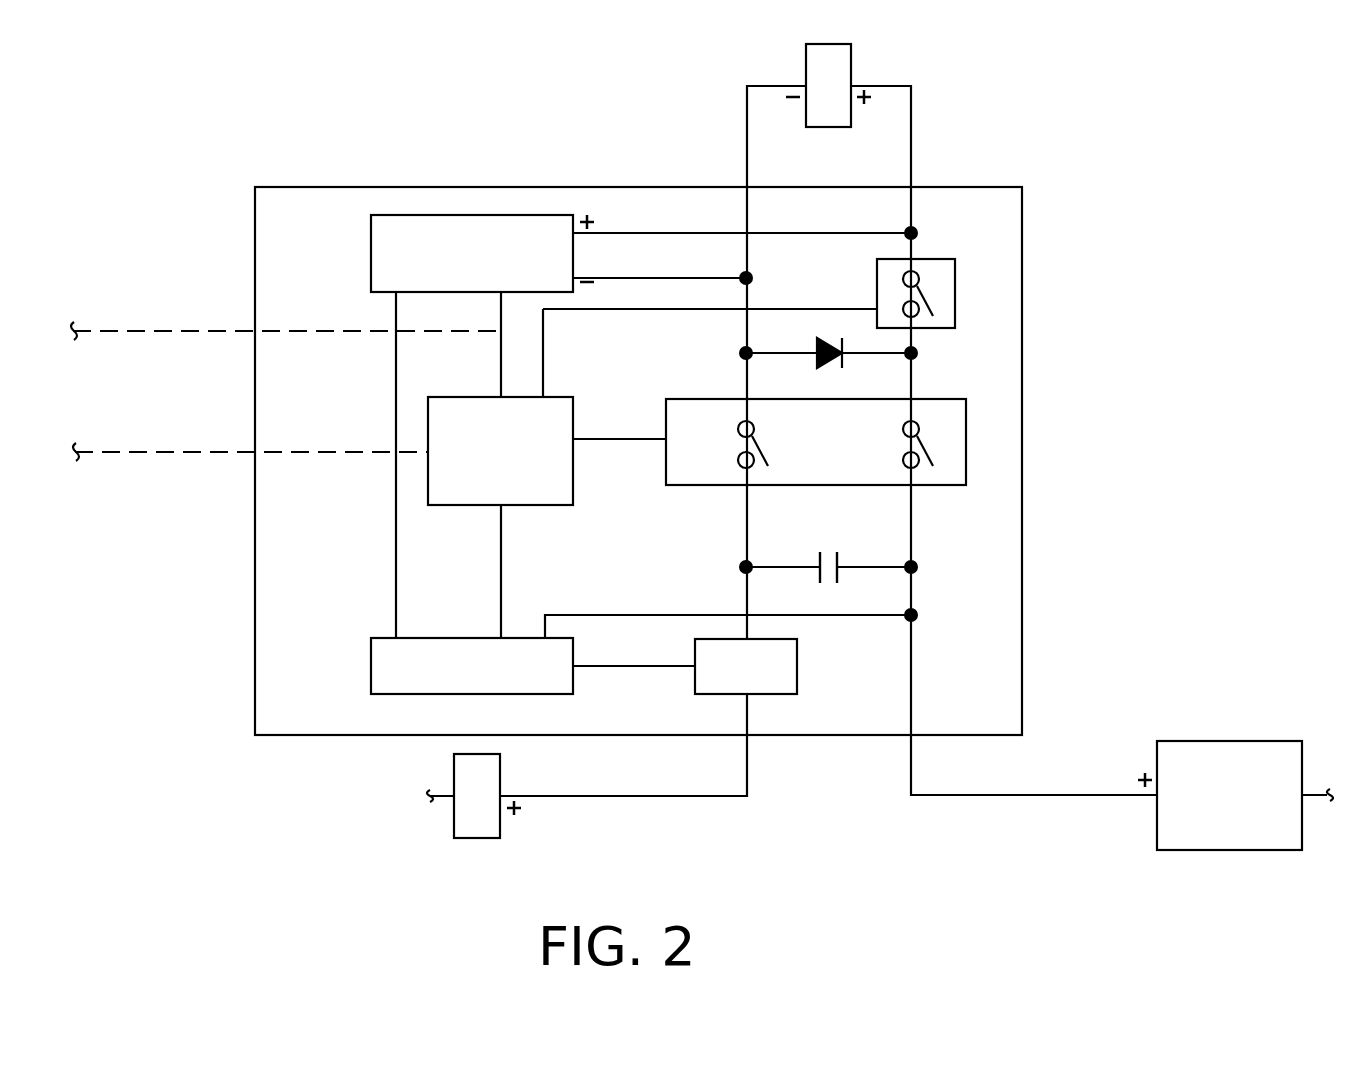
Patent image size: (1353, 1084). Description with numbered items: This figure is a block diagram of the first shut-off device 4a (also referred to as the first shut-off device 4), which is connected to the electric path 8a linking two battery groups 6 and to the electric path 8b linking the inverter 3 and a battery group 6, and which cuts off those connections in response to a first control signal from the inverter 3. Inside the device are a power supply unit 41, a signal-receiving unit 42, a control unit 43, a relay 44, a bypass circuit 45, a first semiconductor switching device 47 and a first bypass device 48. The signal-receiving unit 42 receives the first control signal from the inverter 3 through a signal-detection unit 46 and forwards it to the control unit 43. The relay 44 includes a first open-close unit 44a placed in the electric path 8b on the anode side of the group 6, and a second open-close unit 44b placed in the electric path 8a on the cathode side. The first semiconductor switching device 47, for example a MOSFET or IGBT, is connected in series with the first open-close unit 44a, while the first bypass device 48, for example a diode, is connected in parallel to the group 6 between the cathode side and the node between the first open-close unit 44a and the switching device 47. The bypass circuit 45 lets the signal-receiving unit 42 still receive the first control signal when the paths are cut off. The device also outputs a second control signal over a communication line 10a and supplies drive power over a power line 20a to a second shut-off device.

The first shut-off device 4a is at (1002, 175).
The first shut-off device 4 is at (671, 409).
The group 6 is at (806, 60).
The power supply unit 41 is at (371, 253).
The signal-receiving unit 42 is at (371, 672).
The control unit 43 is at (428, 413).
The relay 44 is at (916, 436).
The first open-close unit 44a is at (925, 445).
The second open-close unit 44b is at (762, 442).
The bypass circuit 45 is at (857, 566).
The signal-detection unit 46 is at (783, 694).
The first semiconductor switching device 47 is at (955, 295).
The first bypass device 48 is at (826, 360).
The inverter 3 is at (1233, 732).
The electric path 8a is at (604, 796).
The electric path 8b is at (1062, 795).
The communication line 10a is at (125, 455).
The power line 20a is at (117, 328).